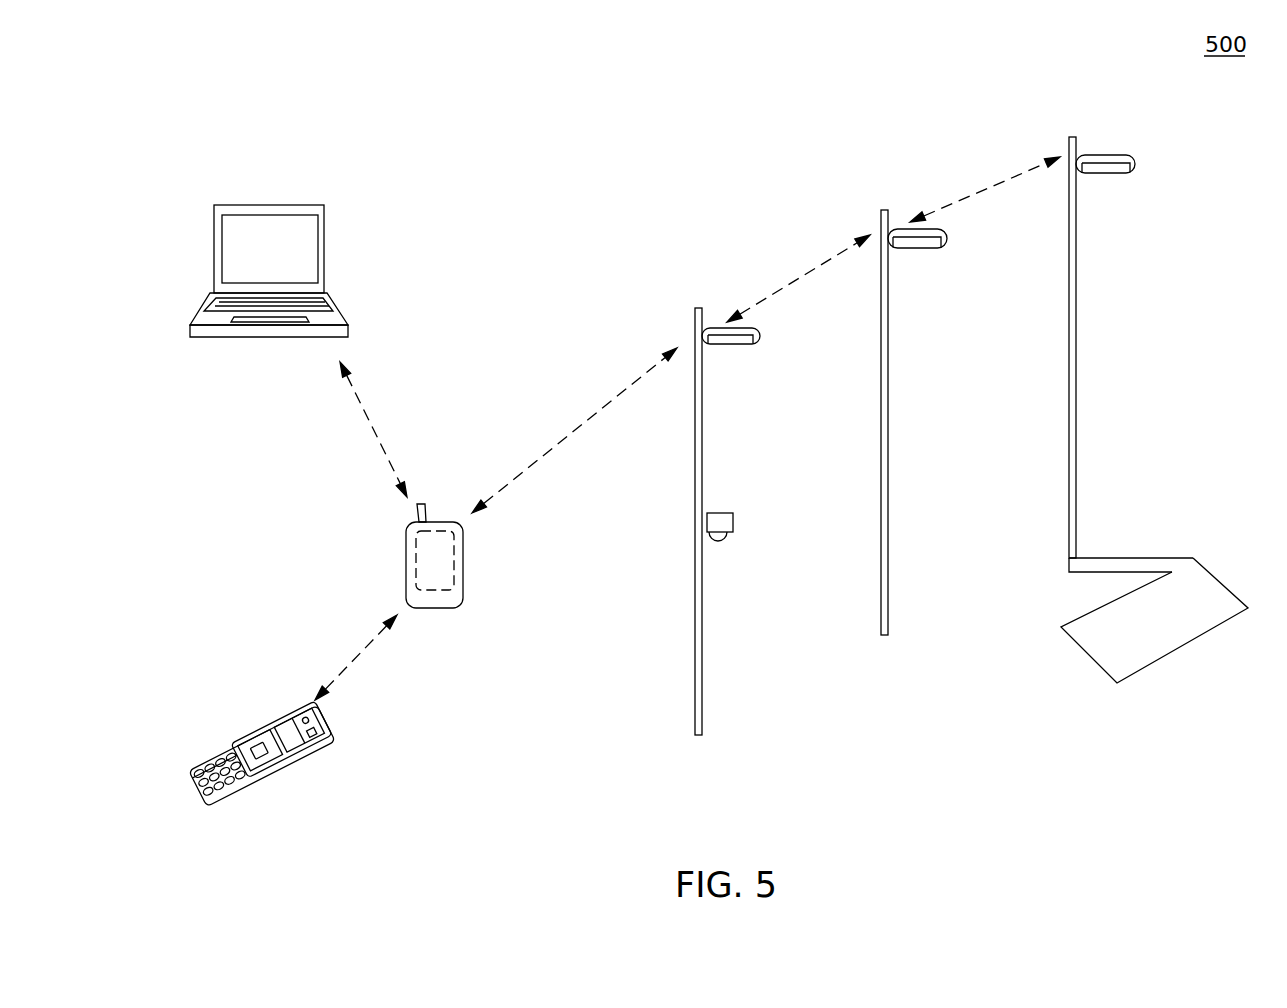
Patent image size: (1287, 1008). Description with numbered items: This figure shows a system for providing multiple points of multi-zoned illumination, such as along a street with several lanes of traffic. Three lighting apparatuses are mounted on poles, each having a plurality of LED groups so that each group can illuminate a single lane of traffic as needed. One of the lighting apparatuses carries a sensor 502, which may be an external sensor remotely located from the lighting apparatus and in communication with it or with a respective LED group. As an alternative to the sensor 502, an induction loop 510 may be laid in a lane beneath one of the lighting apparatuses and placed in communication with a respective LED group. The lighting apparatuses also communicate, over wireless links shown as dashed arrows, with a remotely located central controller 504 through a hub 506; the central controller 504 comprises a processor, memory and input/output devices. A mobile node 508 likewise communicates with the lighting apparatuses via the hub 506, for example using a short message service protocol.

The sensor 502 is at (733, 522).
The central controller 504 is at (295, 205).
The hub 506 is at (463, 553).
The mobile node 508 is at (317, 748).
The induction loop 510 is at (1155, 558).